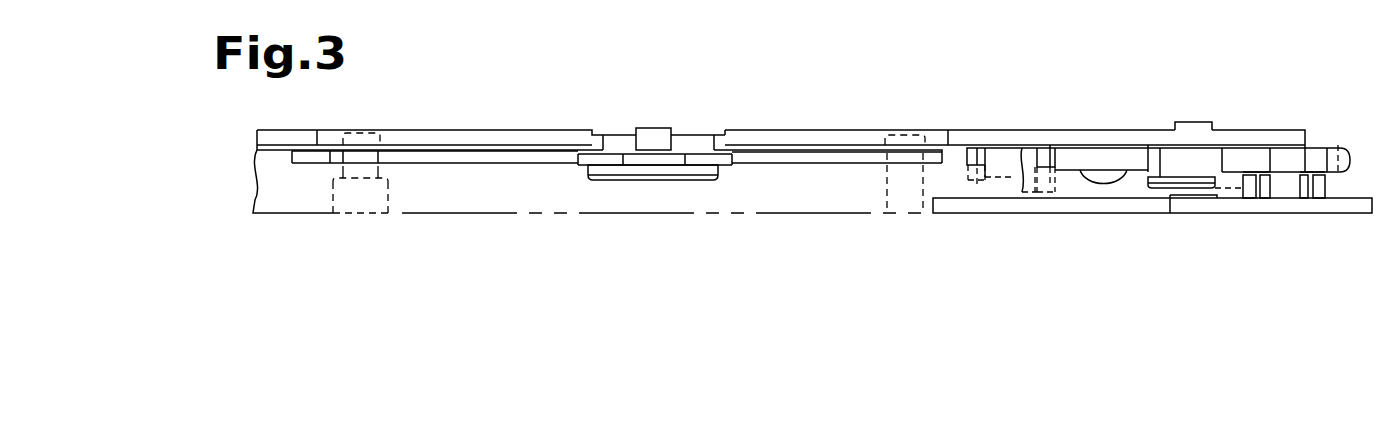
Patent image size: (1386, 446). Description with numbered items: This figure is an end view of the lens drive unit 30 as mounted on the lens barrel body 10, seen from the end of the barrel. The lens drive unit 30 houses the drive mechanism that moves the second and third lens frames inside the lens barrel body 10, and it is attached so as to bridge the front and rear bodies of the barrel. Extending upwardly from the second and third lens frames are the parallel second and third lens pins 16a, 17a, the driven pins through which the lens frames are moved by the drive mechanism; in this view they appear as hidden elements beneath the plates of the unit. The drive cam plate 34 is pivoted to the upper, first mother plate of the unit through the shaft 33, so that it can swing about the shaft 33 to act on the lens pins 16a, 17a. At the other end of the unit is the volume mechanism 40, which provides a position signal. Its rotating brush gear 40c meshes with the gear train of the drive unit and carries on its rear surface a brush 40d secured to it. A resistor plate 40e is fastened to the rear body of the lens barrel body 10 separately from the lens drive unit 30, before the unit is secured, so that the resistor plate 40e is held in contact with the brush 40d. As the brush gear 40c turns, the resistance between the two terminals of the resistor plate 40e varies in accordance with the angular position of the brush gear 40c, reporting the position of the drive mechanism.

The lens barrel body 10 is at (810, 237).
The lens drive unit 30 is at (1226, 97).
The second lens pin 16a is at (363, 215).
The third lens pin 17a is at (903, 200).
The shaft 33 is at (653, 158).
The drive cam plate 34 is at (517, 157).
The volume mechanism 40 is at (1171, 279).
The brush gear 40c is at (1255, 158).
The brush 40d is at (1320, 185).
The resistor plate 40e is at (1058, 203).